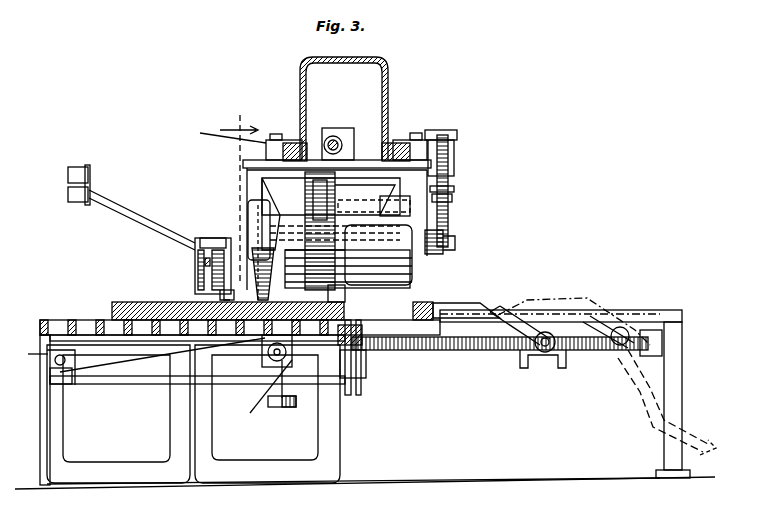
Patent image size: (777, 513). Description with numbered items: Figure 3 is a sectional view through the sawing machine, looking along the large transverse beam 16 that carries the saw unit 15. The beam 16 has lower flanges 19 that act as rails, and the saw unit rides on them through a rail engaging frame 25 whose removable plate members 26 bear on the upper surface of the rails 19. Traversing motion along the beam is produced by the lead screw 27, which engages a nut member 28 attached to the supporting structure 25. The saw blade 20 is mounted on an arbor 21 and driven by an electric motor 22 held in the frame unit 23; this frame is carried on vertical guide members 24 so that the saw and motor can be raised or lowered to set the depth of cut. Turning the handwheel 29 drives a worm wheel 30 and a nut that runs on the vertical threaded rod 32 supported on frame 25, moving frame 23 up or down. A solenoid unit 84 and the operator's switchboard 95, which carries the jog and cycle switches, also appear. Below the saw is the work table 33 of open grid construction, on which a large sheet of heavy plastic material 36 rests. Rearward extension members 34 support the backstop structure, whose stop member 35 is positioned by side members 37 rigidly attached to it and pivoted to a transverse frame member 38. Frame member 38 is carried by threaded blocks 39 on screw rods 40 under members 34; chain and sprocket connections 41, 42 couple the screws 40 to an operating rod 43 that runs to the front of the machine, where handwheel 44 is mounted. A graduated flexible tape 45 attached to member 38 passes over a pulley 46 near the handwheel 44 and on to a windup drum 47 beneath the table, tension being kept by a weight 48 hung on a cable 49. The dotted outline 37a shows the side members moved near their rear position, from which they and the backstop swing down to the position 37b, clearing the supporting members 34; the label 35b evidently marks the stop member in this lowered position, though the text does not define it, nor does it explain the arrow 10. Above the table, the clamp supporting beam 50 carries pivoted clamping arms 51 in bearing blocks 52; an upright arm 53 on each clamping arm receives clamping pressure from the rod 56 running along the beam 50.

The transverse beam 16 is at (384, 62).
The lead screw 27 is at (322, 130).
The nut member 28 is at (348, 140).
The lower flanges 19 is at (266, 153).
The direction arrow / machine 10 is at (239, 197).
The removable plate members 26 is at (221, 130).
The solenoid unit 84 is at (456, 138).
The rail engaging frame 25 is at (448, 155).
The frame unit 23 is at (285, 222).
The vertical threaded rod 32 is at (300, 182).
The worm wheel 30 is at (312, 205).
The vertical guide members 24 is at (345, 186).
The handwheel 29 is at (454, 197).
The saw blade 20 is at (262, 215).
The saw unit 15 is at (458, 243).
The arbor 21 is at (244, 262).
The electric motor 22 is at (412, 268).
The operator's switchboard 95 is at (82, 167).
The rod 56 is at (214, 238).
The beam structure 50 is at (196, 258).
The upright arm 53 is at (205, 263).
The bearing blocks 52 is at (212, 283).
The clamping arms 51 is at (218, 291).
The sheet of heavy plastic material 36 is at (116, 302).
The work table 33 is at (70, 320).
The backstop 35 is at (435, 305).
The side members 37 is at (508, 316).
The dotted outline of side frame members 37a is at (580, 298).
The threaded blocks 39 is at (590, 320).
The rearward extension members 34 is at (645, 310).
The drum or pulley 46 is at (50, 362).
The handwheel 44 is at (45, 398).
The rotatable operating rod 43 is at (118, 384).
The graduated flexible metal tape 45 is at (300, 345).
The windup drum 47 is at (265, 370).
The cable 49 is at (264, 391).
The weight 48 is at (280, 407).
The chain and sprocket connection 41 is at (366, 360).
The chain and sprocket connection 42 is at (352, 392).
The screw rods 40 is at (452, 350).
The transverse frame member 38 is at (548, 365).
The lowered position of side frame members 37b is at (655, 408).
The extension (lowered position) 35b is at (712, 450).